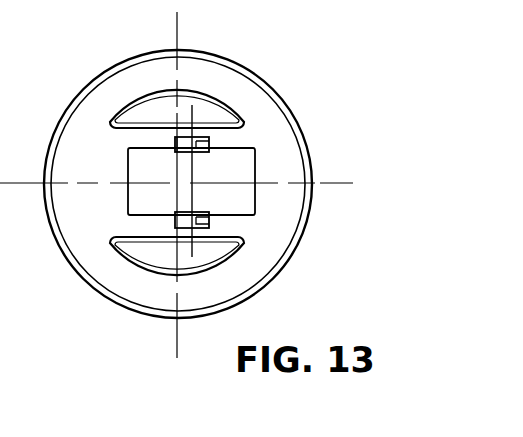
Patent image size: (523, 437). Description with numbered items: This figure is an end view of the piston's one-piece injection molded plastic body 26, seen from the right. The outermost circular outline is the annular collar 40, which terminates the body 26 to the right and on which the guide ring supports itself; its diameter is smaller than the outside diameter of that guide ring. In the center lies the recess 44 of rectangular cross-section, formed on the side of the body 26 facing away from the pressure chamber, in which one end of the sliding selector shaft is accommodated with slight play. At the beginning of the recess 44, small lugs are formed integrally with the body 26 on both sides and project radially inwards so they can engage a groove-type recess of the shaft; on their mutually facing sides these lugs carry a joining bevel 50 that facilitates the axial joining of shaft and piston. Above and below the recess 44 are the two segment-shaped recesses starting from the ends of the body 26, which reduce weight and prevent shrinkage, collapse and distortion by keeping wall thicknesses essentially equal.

The annular collar 40 is at (125, 57).
The body 26 is at (283, 165).
The recess 44 is at (246, 194).
The joining bevel 50 is at (182, 151).